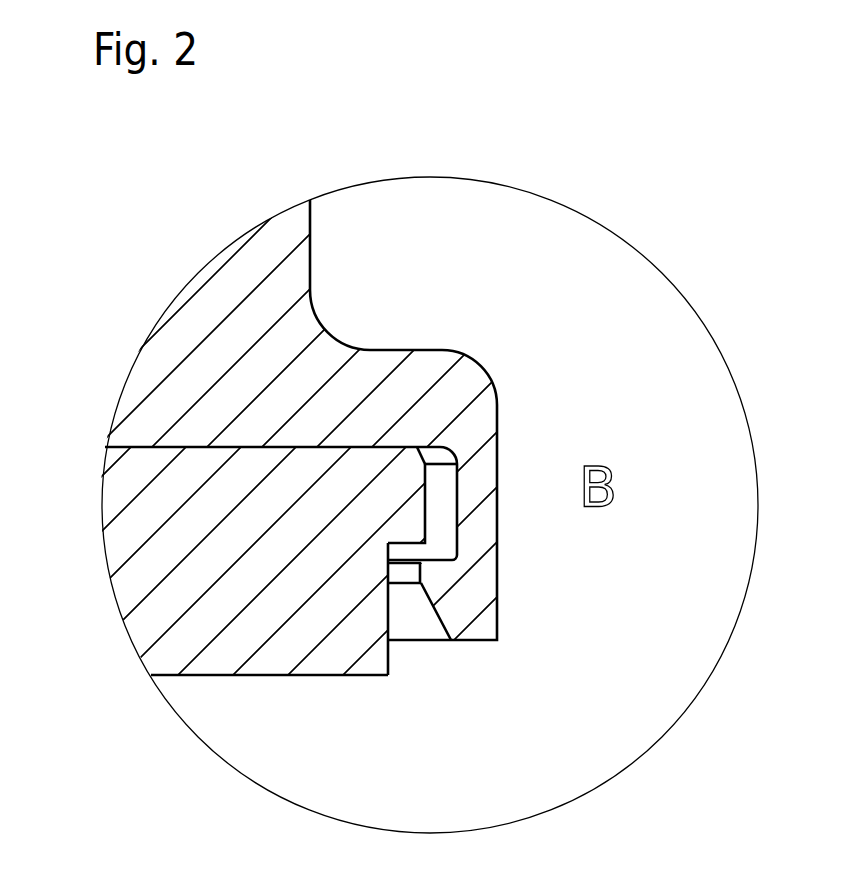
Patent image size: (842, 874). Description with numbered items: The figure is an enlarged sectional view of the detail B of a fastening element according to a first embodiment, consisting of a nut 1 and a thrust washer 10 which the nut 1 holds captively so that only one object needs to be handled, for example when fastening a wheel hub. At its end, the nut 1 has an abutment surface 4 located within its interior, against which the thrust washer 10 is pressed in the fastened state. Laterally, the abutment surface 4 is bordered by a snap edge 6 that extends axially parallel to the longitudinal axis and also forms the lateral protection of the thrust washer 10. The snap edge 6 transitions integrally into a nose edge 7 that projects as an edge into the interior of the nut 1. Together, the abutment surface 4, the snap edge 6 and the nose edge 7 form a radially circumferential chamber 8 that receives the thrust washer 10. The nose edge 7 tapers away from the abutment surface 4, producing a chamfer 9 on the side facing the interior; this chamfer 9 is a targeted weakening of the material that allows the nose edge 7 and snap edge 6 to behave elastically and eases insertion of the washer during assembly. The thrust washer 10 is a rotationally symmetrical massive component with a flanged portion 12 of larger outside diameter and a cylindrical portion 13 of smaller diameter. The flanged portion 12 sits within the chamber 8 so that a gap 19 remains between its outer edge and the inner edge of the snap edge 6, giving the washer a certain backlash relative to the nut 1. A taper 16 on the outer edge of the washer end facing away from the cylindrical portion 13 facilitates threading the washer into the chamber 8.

The nut 1 is at (283, 315).
The abutment surface 4 is at (337, 447).
The snap edge 6 is at (472, 492).
The nose edge 7 is at (462, 583).
The chamber 8 is at (441, 478).
The chamfer 9 is at (440, 618).
The thrust washer 10 is at (210, 560).
The flanged portion 12 is at (375, 493).
The cylindrical portion 13 is at (367, 607).
The taper 16 is at (433, 450).
The gap 19 is at (453, 516).